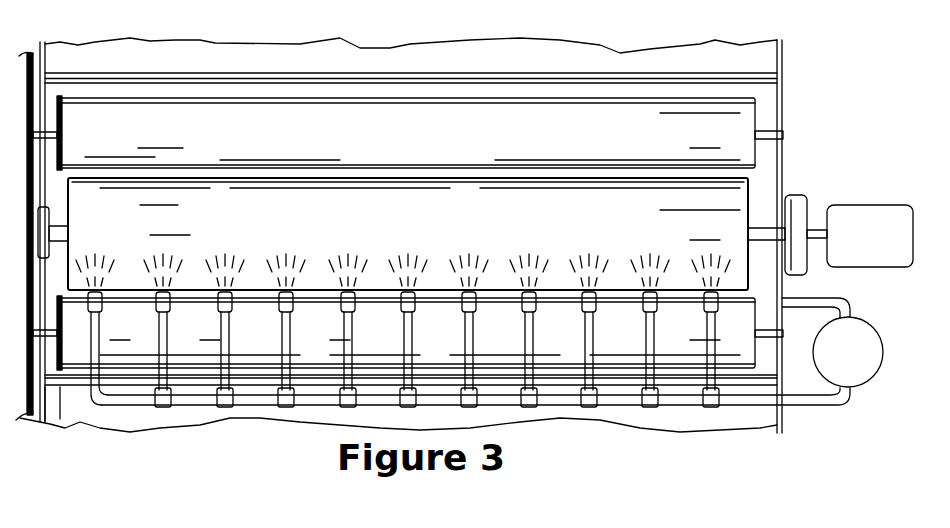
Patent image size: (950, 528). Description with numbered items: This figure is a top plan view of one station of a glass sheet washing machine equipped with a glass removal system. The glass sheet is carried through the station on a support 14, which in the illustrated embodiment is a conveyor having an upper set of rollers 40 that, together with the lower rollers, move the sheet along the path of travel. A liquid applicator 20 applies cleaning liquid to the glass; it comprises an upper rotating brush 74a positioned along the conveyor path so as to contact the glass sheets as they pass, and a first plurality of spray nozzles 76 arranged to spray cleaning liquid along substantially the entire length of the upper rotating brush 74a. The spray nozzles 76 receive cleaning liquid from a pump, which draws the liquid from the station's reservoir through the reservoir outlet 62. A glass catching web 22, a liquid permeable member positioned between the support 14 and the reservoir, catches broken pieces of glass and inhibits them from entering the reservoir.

The support 14 is at (766, 96).
The liquid applicator 20 is at (765, 280).
The glass catching web 22 is at (82, 405).
The upper set of rollers 40 is at (115, 128).
The outlet 62 is at (808, 406).
The upper rotating brush 74a is at (228, 205).
The spray nozzles 76 is at (99, 303).